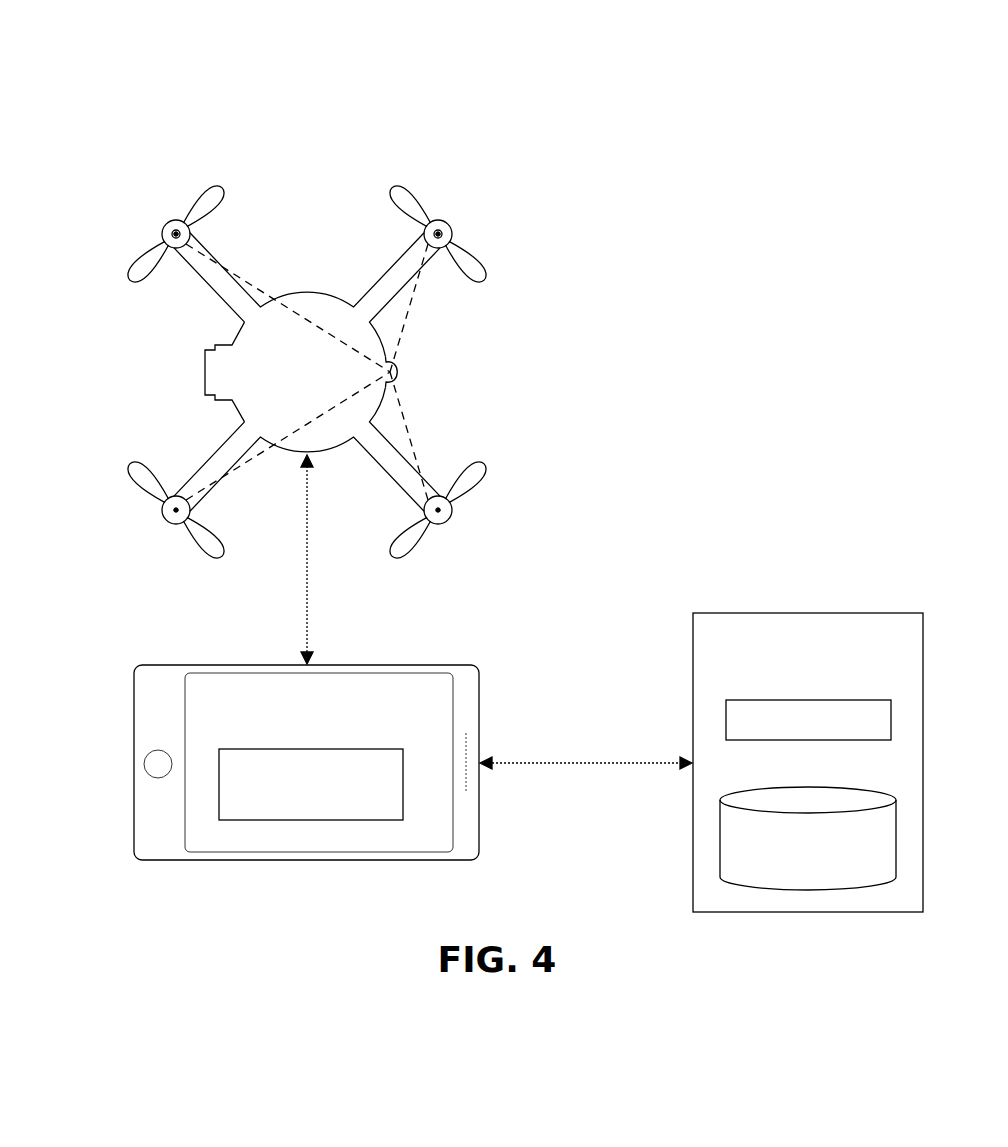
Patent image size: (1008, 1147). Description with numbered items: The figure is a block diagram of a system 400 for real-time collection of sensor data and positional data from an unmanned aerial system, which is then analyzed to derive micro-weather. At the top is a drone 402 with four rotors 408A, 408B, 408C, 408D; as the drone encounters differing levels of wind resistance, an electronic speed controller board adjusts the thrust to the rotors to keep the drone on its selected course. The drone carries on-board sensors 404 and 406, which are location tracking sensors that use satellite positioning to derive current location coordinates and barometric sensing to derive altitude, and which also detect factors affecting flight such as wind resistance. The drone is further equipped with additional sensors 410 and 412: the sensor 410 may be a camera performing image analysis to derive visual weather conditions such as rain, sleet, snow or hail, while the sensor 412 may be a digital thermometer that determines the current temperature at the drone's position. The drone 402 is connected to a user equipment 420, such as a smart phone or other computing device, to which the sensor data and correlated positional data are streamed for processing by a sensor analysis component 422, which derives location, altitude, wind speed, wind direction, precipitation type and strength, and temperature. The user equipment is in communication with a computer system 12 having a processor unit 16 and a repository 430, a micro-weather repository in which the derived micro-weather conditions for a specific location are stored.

The system 400 is at (95, 56).
The drone 402 is at (305, 293).
The sensors 404 is at (163, 227).
The sensors 406 is at (452, 227).
The rotor 408A is at (175, 522).
The rotor 408B is at (170, 224).
The rotor 408C is at (443, 224).
The rotor 408D is at (442, 524).
The sensor 410 is at (205, 373).
The sensor 412 is at (398, 372).
The user equipment 420 is at (438, 665).
The sensor analysis component 422 is at (324, 749).
The computer system 12 is at (852, 613).
The processor unit 16 is at (797, 700).
The repository 430 is at (798, 790).